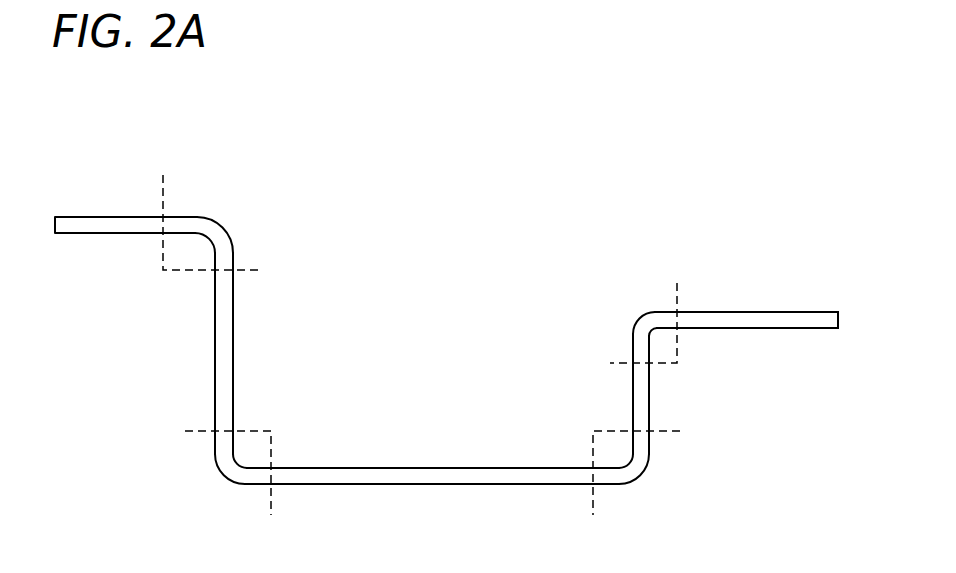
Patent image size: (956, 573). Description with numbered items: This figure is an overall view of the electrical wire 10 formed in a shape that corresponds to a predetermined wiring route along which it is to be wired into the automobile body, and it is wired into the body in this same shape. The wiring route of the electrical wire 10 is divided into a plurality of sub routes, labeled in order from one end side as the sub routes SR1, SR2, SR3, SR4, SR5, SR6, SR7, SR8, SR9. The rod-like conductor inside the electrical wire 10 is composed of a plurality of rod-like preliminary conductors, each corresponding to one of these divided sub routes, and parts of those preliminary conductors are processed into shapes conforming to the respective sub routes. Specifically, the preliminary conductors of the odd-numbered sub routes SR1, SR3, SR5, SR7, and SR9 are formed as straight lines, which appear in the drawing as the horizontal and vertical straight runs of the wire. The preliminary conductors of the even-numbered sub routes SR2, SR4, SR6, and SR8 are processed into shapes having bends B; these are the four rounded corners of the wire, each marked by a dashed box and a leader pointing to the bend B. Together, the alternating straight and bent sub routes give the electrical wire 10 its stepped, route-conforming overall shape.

The electrical wire 10 is at (419, 174).
The sub route SR1 is at (126, 203).
The sub route SR2 is at (234, 224).
The sub route SR3 is at (253, 353).
The sub route SR4 is at (212, 483).
The sub route SR5 is at (432, 497).
The sub route SR6 is at (656, 483).
The sub route SR7 is at (603, 394).
The sub route SR8 is at (625, 310).
The sub route SR9 is at (746, 302).
The bend B is at (207, 222).